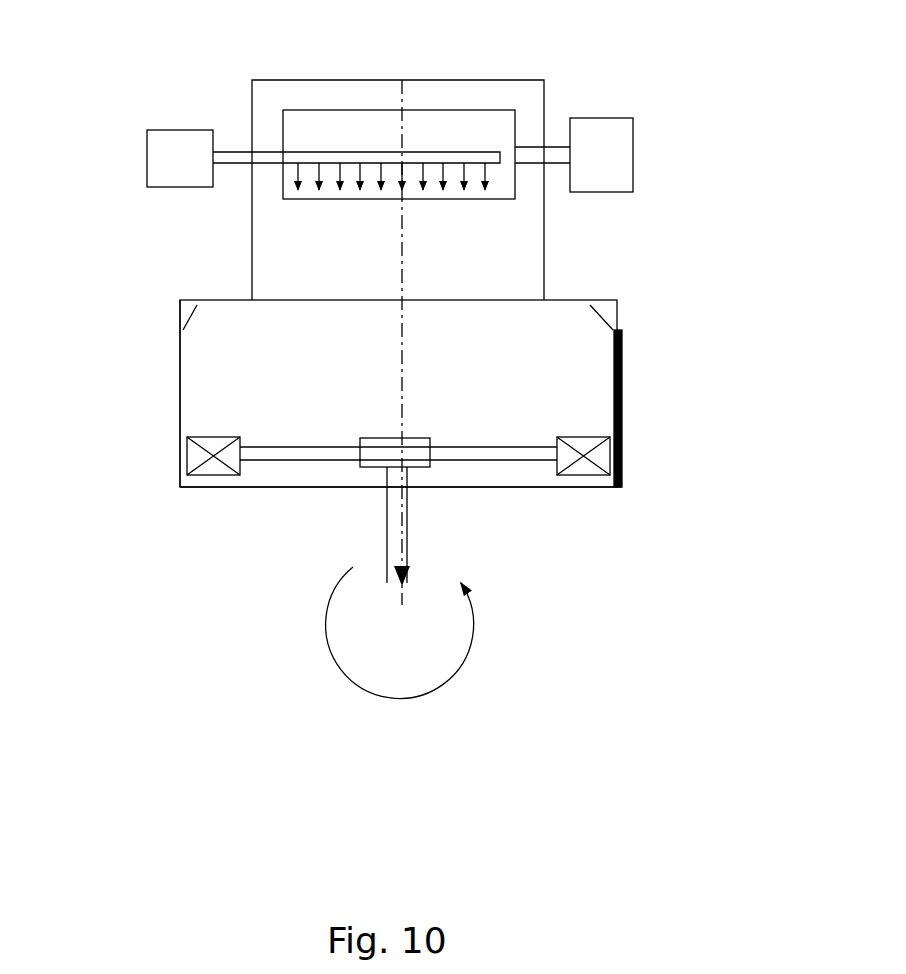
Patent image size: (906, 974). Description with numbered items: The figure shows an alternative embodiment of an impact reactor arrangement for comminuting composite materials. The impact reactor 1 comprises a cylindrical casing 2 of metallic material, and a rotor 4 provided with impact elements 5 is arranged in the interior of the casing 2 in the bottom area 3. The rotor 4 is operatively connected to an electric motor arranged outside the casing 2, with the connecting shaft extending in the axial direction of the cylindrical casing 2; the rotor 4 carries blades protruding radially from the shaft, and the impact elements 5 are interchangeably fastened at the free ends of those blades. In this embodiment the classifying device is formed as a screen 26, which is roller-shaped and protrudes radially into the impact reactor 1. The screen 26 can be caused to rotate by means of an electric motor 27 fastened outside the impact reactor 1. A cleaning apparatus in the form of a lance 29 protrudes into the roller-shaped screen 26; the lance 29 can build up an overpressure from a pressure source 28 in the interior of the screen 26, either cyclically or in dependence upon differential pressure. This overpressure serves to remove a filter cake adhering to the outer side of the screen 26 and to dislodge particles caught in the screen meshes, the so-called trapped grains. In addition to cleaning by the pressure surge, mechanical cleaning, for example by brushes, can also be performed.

The impact reactor 1 is at (559, 337).
The casing 2 is at (178, 375).
The bottom area 3 is at (498, 489).
The rotor 4 is at (297, 462).
The impact elements 5 is at (211, 464).
The screen 26 is at (433, 109).
The electric motor 27 is at (628, 118).
The pressure source 28 is at (177, 129).
The lance 29 is at (348, 150).